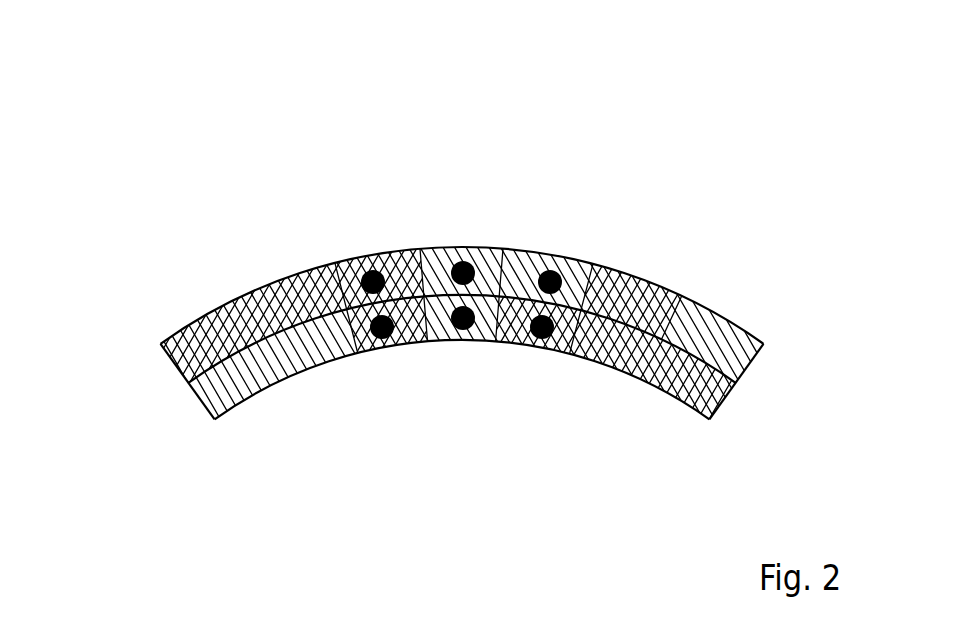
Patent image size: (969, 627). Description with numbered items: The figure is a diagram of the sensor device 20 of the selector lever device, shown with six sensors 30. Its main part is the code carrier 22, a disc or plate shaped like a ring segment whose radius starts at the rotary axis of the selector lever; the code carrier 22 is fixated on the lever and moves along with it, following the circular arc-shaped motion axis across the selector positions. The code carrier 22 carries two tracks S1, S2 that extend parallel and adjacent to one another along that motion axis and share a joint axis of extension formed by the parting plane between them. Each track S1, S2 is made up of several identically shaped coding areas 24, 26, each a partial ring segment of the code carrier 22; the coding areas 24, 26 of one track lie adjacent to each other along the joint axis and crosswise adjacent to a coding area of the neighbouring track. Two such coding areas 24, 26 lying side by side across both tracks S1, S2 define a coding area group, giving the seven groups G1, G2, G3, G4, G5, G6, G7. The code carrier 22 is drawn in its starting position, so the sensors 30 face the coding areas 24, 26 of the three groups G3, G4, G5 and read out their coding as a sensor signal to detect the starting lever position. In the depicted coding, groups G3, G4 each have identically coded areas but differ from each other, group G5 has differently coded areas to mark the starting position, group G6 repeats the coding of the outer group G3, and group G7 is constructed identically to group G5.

The sensor device 20 is at (463, 243).
The code carrier 22 is at (170, 336).
The coding area 24 is at (200, 320).
The coding area 26 is at (293, 353).
The sensor 30 is at (360, 257).
The coding area group G1 is at (183, 210).
The coding area group G2 is at (232, 200).
The coding area group G3 is at (379, 184).
The coding area group G4 is at (487, 182).
The third coding area group G5 is at (627, 190).
The coding area group G6 is at (676, 198).
The coding area group G7 is at (781, 216).
The track S1 is at (133, 457).
The track S2 is at (175, 476).